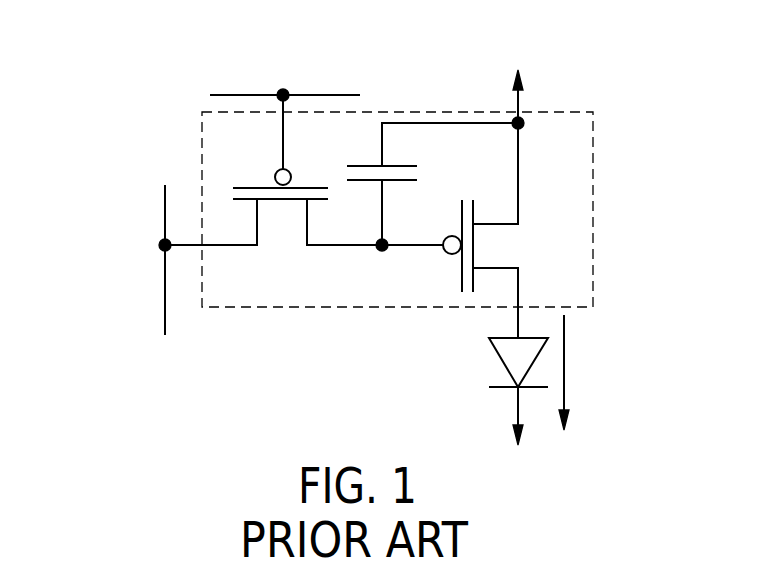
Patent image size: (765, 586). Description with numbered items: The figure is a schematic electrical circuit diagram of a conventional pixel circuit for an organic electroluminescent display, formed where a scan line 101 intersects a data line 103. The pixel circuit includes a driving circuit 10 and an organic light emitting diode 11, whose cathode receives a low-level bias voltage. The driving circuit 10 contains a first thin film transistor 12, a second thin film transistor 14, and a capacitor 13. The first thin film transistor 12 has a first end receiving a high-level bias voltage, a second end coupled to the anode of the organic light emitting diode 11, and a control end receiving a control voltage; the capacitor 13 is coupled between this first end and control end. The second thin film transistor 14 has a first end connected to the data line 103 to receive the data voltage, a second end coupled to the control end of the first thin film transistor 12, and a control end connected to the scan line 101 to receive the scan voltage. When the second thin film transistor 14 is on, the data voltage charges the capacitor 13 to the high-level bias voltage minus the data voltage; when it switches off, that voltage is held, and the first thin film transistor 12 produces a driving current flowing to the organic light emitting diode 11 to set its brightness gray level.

The driving circuit 10 is at (593, 147).
The organic light emitting diode 11 is at (502, 360).
The first thin film transistor 12 is at (475, 243).
The capacitor 13 is at (403, 165).
The second thin film transistor 14 is at (292, 200).
The scan line 101 is at (250, 93).
The data line 103 is at (165, 215).